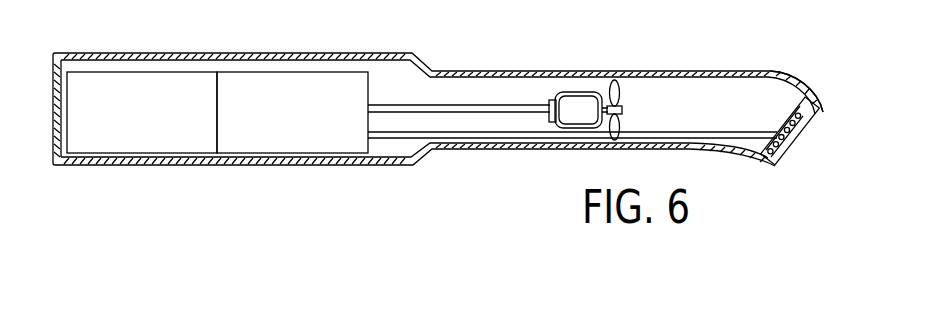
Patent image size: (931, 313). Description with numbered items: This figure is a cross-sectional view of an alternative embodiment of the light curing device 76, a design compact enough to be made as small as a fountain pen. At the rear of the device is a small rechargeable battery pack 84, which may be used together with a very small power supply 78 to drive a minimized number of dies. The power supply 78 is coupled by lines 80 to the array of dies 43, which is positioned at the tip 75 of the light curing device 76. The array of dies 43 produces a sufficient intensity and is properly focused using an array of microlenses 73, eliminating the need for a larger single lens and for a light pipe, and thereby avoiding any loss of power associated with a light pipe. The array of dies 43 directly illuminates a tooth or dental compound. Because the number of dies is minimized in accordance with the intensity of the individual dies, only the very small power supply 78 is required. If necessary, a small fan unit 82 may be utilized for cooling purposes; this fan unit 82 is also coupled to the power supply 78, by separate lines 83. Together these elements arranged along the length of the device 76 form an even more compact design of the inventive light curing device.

The light curing device 76 is at (383, 46).
The rechargeable battery pack 84 is at (107, 72).
The power supply 78 is at (237, 73).
The lines 83 is at (437, 110).
The lines 80 is at (458, 133).
The fan unit 82 is at (627, 88).
The microlenses 73 is at (806, 121).
The array of dies 43 is at (803, 127).
The tip 75 is at (826, 100).